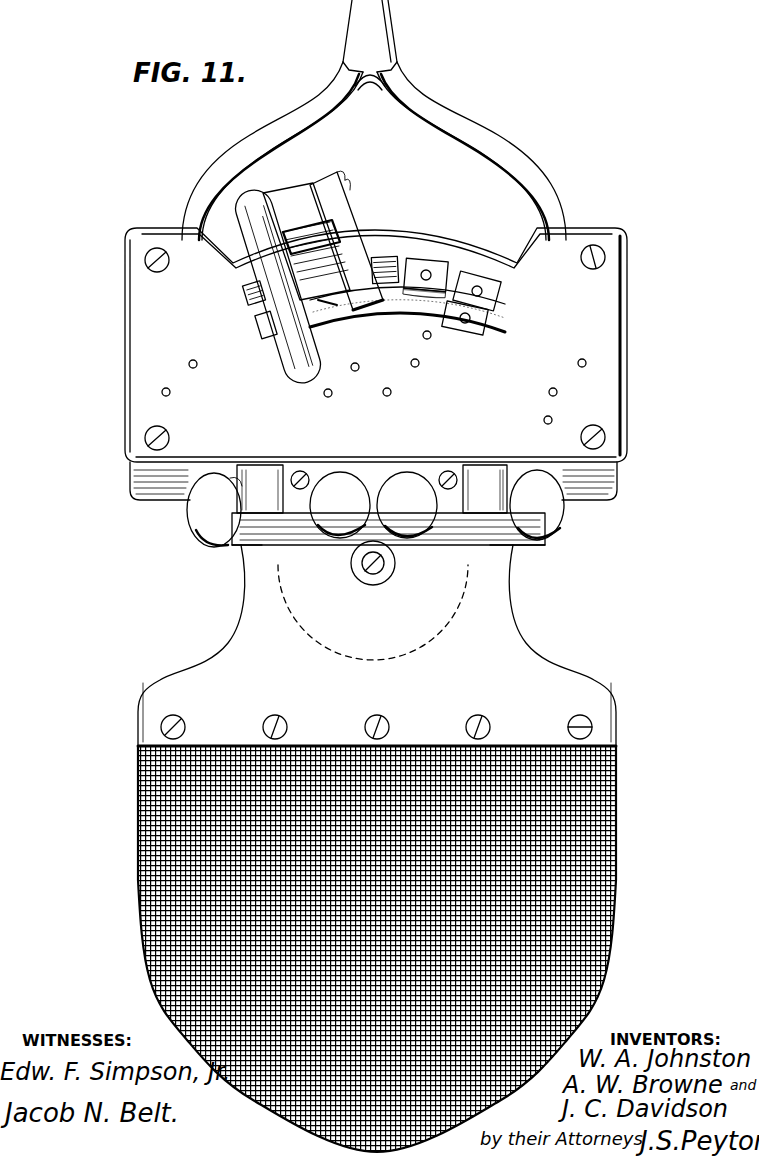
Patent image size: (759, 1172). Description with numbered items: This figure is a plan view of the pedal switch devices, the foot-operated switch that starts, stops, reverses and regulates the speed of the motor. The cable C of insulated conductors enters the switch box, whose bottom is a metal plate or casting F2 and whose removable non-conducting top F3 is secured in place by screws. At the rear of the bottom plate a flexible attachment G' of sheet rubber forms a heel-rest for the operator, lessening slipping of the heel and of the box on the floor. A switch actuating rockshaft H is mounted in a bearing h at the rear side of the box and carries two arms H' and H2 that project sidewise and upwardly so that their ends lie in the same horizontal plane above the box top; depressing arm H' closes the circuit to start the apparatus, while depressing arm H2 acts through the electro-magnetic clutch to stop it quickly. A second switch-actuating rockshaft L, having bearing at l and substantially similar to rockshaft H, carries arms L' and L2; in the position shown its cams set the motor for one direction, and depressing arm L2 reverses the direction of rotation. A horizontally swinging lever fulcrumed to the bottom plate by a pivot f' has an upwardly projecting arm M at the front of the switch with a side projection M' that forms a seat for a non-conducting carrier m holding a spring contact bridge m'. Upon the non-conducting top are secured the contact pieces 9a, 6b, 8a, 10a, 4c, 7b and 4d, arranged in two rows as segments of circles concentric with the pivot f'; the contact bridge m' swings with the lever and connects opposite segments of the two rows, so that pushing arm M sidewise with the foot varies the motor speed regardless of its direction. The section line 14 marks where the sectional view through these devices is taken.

The cable C is at (367, 8).
The bottom plate F2 is at (598, 313).
The non-conducting top F3 is at (377, 646).
The flexible attachment G' is at (356, 950).
The section line 14 is at (68, 435).
The upwardly projecting arm M is at (278, 286).
The side projection M' is at (306, 241).
The non-conducting carrier m is at (347, 240).
The spring contact bridge m' is at (333, 328).
The regulating contact piece 8a is at (256, 281).
The regulating contact 9a is at (260, 316).
The regulating contact piece 10a is at (390, 247).
The contact piece 4c is at (437, 272).
The contact 7b is at (490, 297).
The contact 6b is at (392, 318).
The contact piece 4d is at (466, 330).
The rockshaft arm H2 is at (214, 510).
The bearing h is at (260, 489).
The rockshaft arm H' is at (330, 504).
The switch actuating rockshaft H is at (250, 566).
The rockshaft arm L' is at (417, 504).
The bearing l is at (485, 489).
The rockshaft arm L2 is at (537, 505).
The second switch-actuating rockshaft L is at (510, 566).
The pivot f' is at (385, 568).